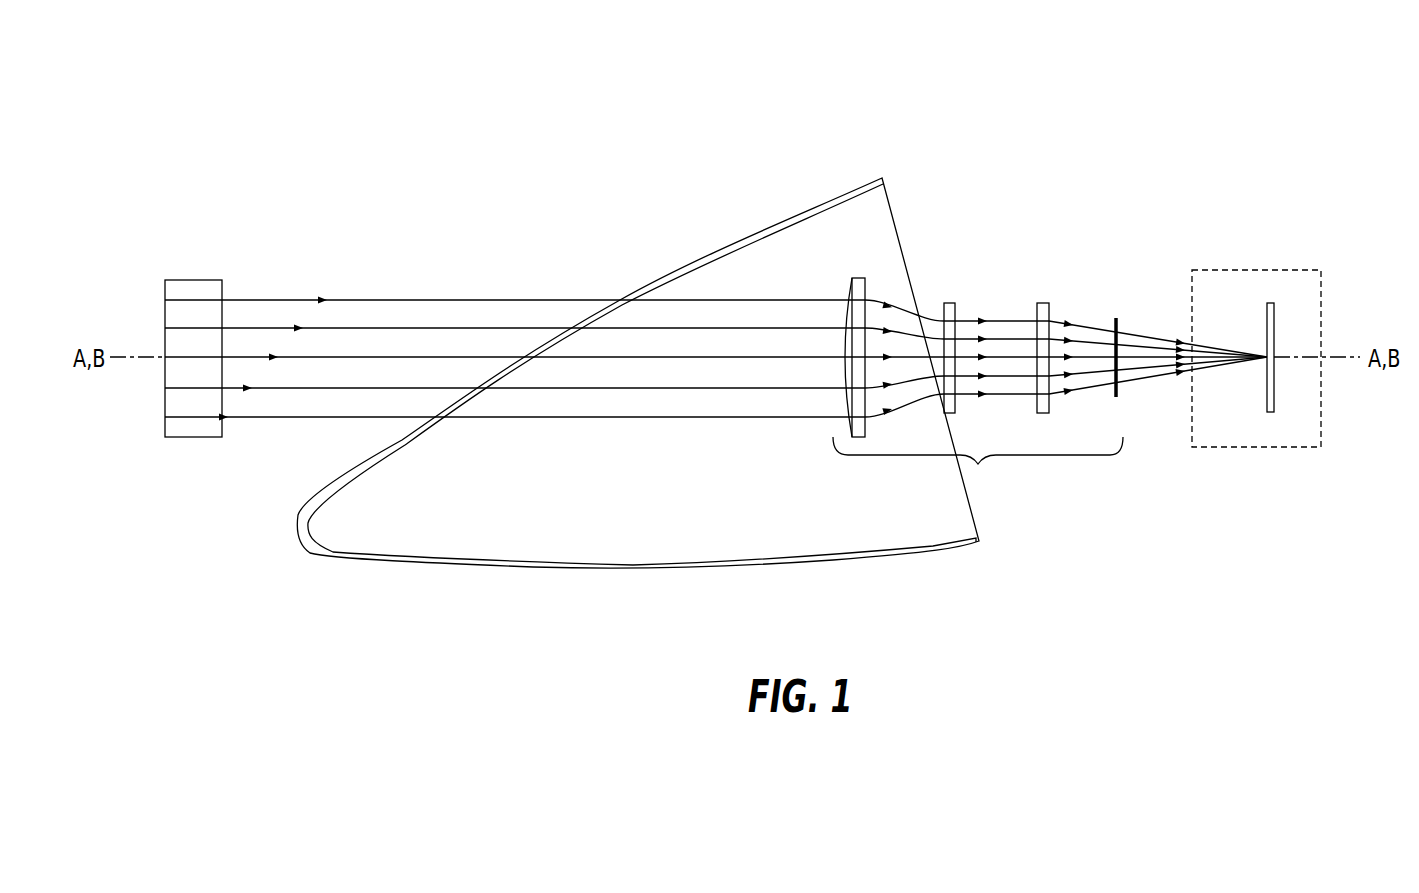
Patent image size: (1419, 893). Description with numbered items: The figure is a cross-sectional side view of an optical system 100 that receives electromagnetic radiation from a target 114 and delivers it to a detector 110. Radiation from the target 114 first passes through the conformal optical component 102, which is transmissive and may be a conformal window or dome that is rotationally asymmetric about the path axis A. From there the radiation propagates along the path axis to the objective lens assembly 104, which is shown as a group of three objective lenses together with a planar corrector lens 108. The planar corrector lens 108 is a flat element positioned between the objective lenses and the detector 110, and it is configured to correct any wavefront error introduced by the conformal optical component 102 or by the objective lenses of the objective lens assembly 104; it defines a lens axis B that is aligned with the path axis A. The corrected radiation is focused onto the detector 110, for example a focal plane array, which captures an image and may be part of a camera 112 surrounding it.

The optical system 100 is at (716, 249).
The conformal optical component 102 is at (638, 373).
The objective lens assembly 104 is at (978, 356).
The planar corrector lens 108 is at (1145, 328).
The detector 110 is at (1289, 403).
The camera 112 is at (1263, 358).
The target 114 is at (181, 330).